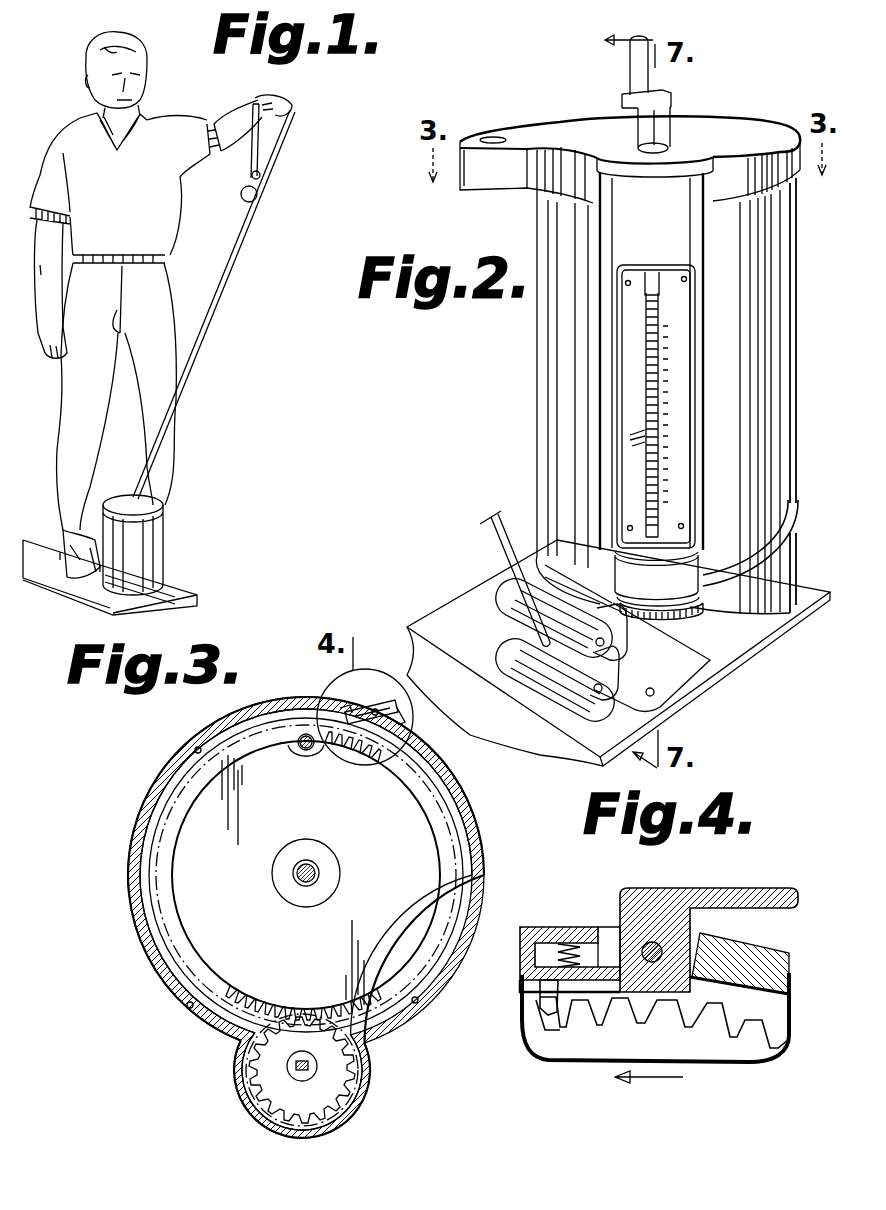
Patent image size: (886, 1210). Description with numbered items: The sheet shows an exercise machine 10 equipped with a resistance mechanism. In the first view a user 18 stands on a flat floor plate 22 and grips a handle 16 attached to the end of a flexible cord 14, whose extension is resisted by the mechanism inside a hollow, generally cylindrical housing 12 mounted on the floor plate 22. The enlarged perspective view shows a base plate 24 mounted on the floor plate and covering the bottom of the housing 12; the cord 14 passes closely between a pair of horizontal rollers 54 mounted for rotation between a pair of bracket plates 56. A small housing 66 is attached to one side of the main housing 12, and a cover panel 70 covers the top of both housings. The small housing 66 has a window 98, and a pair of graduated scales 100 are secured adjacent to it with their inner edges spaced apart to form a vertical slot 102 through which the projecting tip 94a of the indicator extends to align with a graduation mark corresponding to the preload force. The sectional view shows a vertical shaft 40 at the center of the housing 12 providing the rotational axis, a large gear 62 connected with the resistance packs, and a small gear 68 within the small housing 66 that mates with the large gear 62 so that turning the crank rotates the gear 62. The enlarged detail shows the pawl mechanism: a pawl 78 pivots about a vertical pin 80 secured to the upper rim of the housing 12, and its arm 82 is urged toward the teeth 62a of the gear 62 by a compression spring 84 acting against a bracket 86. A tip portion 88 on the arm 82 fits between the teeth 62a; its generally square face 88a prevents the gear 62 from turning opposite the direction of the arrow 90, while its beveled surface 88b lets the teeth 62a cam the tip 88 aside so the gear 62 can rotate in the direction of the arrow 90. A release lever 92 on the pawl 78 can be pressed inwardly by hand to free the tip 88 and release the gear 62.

In FIG. 1, the exercise machine 10 is at (179, 534).
In FIG. 2, the exercise machine 10 is at (520, 425).
In FIG. 1, the housing 12 is at (164, 565).
In FIG. 2, the housing 12 is at (783, 346).
In FIG. 4, the housing 12 is at (768, 955).
In FIG. 1, the flexible cord 14 is at (206, 314).
In FIG. 2, the flexible cord 14 is at (497, 545).
In FIG. 1, the handle 16 is at (262, 103).
In FIG. 1, the user 18 is at (177, 215).
In FIG. 1, the floor plate 22 is at (85, 580).
In FIG. 2, the floor plate 22 is at (448, 610).
In FIG. 2, the base plate 24 is at (716, 668).
In FIG. 3, the vertical shaft 40 is at (308, 862).
In FIG. 2, the horizontal rollers 54 is at (505, 628).
In FIG. 2, the bracket plates 56 is at (644, 654).
In FIG. 2, the large gear 62 is at (750, 543).
In FIG. 3, the large gear 62 is at (176, 940).
In FIG. 4, the large gear 62 is at (748, 1060).
In FIG. 4, the teeth 62a is at (778, 1033).
In FIG. 2, the small housing 66 is at (703, 274).
In FIG. 3, the small housing 66 is at (236, 1074).
In FIG. 3, the small gear 68 is at (330, 1092).
In FIG. 2, the cover panel 70 is at (752, 132).
In FIG. 3, the pawl 78 is at (380, 705).
In FIG. 4, the pawl 78 is at (690, 926).
In FIG. 4, the vertical pin 80 is at (658, 962).
In FIG. 4, the pawl arm 82 is at (600, 987).
In FIG. 4, the compression spring 84 is at (540, 930).
In FIG. 4, the bracket 86 is at (566, 928).
In FIG. 4, the tip portion 88 is at (548, 1000).
In FIG. 4, the square face 88a is at (540, 996).
In FIG. 4, the beveled surface 88b is at (545, 1032).
In FIG. 4, the arrow 90 is at (665, 1078).
In FIG. 4, the release lever 92 is at (790, 888).
In FIG. 2, the projecting tip 94a is at (656, 272).
In FIG. 2, the window 98 is at (690, 444).
In FIG. 2, the graduated scales 100 is at (650, 492).
In FIG. 2, the vertical slot 102 is at (646, 342).